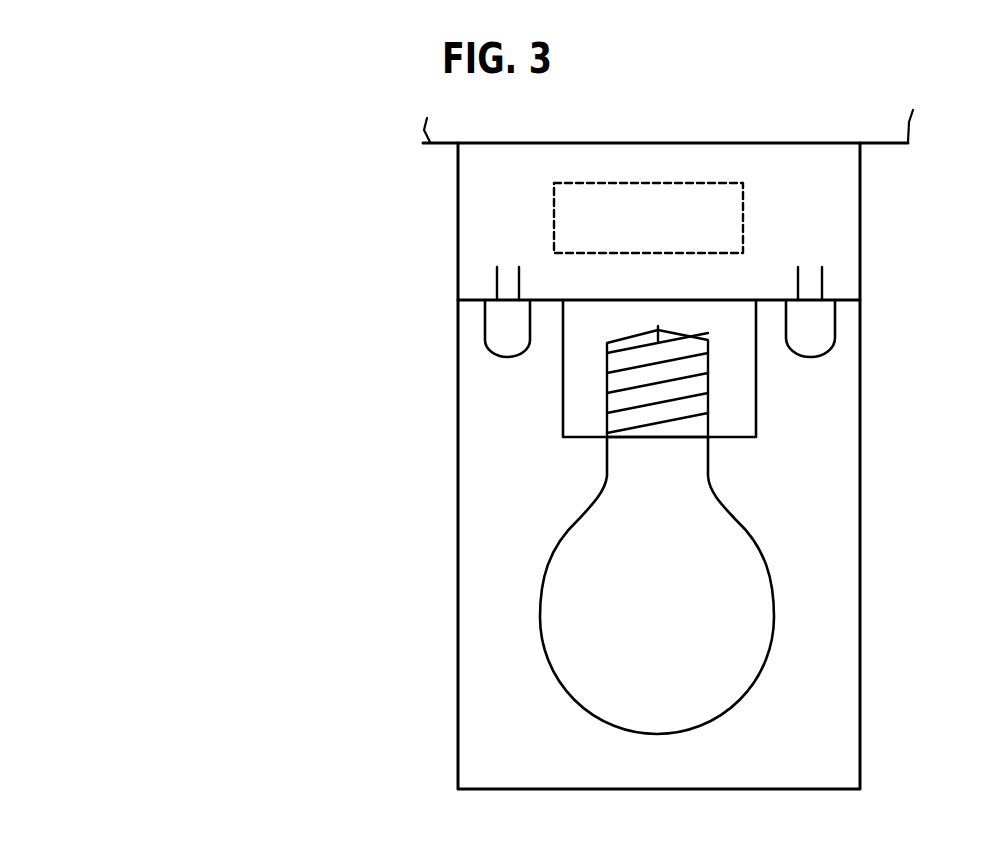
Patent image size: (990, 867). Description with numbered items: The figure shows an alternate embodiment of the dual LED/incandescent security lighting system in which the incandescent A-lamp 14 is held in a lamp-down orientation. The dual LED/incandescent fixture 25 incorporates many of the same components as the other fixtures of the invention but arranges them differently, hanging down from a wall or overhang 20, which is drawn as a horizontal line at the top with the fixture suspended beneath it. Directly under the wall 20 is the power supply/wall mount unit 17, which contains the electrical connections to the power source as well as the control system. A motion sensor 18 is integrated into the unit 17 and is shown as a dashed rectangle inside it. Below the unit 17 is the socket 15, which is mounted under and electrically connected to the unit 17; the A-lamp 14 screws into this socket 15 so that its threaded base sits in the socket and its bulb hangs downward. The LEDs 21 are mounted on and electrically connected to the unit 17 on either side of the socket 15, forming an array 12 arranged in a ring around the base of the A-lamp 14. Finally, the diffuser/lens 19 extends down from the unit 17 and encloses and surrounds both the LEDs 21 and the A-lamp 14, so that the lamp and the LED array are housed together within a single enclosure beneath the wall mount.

The dual LED/incandescent fixture 25 is at (246, 157).
The wall or overhang 20 is at (432, 146).
The power supply/wall mount unit 17 is at (449, 225).
The motion sensor 18 is at (554, 232).
The LEDs 21 is at (521, 357).
The array 12 is at (473, 388).
The socket 15 is at (756, 393).
The diffuser/lens 19 is at (448, 546).
The incandescent lamp 14 is at (784, 634).